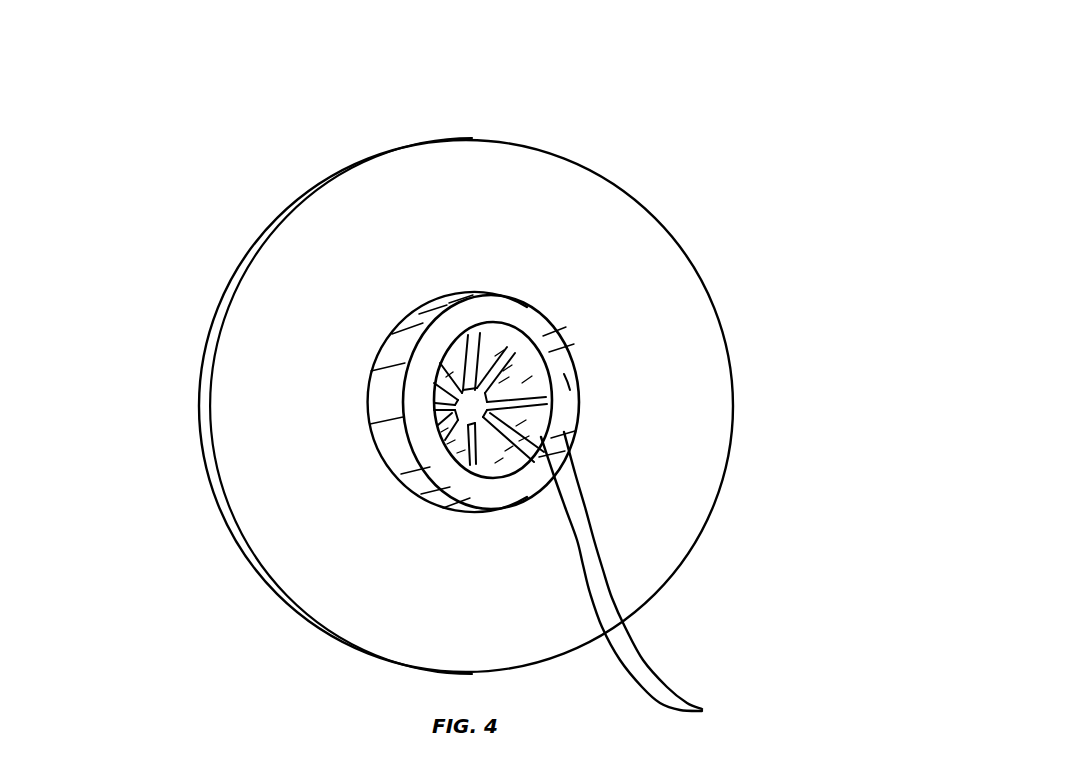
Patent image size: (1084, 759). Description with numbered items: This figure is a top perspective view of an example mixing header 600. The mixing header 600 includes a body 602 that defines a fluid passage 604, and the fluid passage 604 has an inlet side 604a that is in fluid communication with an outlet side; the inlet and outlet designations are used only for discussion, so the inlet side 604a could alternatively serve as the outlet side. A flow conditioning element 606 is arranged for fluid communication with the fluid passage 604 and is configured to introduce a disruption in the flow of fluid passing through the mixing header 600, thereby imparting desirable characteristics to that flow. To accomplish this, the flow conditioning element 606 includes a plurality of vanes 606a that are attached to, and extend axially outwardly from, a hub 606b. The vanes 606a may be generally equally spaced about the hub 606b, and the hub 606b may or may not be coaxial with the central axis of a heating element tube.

The mixing header 600 is at (697, 103).
The body 602 is at (742, 412).
The fluid passage 604 is at (461, 447).
The inlet side 604a is at (565, 428).
The flow conditioning element 606 is at (443, 438).
The vanes 606a is at (647, 578).
The hub 606b is at (556, 364).